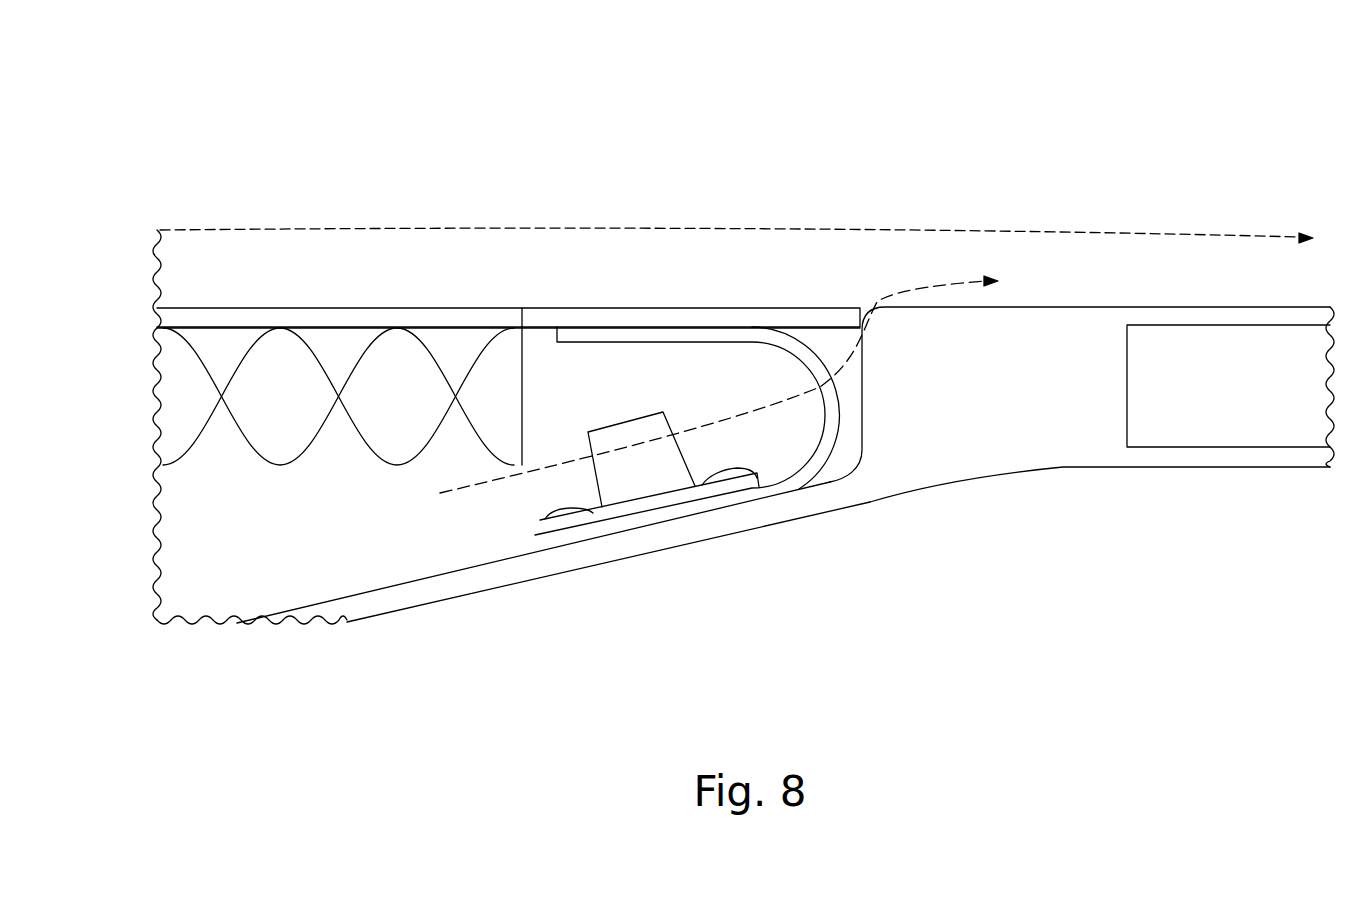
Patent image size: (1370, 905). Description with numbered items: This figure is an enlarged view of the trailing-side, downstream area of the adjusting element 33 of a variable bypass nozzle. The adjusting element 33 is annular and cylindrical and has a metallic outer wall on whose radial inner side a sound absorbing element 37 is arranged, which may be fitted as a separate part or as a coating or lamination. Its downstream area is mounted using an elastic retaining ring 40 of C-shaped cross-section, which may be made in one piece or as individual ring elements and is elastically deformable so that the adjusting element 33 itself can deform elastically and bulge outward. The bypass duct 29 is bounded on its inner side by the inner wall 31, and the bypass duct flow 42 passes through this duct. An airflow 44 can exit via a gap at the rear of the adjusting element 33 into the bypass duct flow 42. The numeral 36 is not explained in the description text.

The bypass duct 29 is at (529, 162).
The inner wall 31 is at (1002, 457).
The adjusting element 33 is at (442, 317).
The lower housing wall 36 is at (408, 543).
The sound absorbing element 37 is at (258, 431).
The retaining ring 40 is at (802, 352).
The bypass duct flow 42 is at (228, 230).
The airflow 44 is at (779, 408).